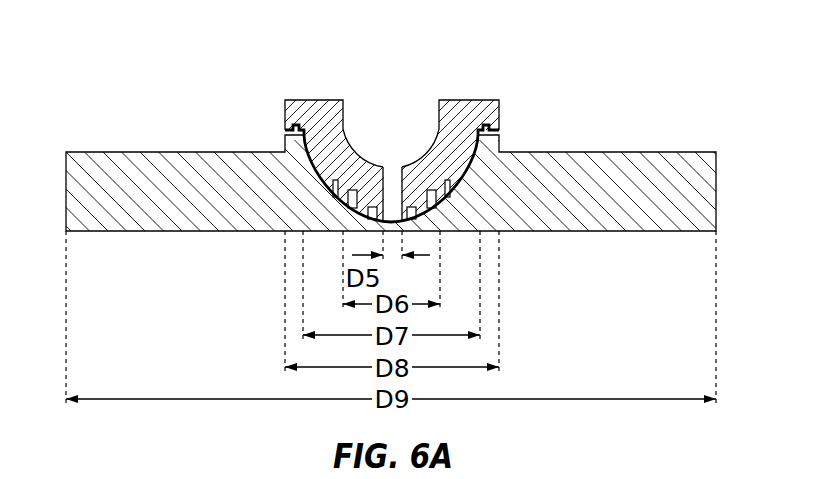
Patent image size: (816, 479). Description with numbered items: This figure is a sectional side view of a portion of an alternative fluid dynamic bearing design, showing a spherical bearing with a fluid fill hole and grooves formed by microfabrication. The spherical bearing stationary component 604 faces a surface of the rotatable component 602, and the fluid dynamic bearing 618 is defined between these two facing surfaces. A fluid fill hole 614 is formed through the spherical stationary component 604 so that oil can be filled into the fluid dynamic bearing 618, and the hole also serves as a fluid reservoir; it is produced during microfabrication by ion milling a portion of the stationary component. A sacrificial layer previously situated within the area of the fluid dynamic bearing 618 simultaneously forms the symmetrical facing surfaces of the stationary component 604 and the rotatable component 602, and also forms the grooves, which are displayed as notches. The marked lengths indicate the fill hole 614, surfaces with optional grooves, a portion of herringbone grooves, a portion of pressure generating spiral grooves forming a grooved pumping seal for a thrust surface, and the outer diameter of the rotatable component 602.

The rotatable component 602 is at (618, 160).
The spherical bearing stationary component 604 is at (463, 103).
The fluid fill hole 614 is at (390, 177).
The fluid dynamic bearing 618 is at (316, 167).